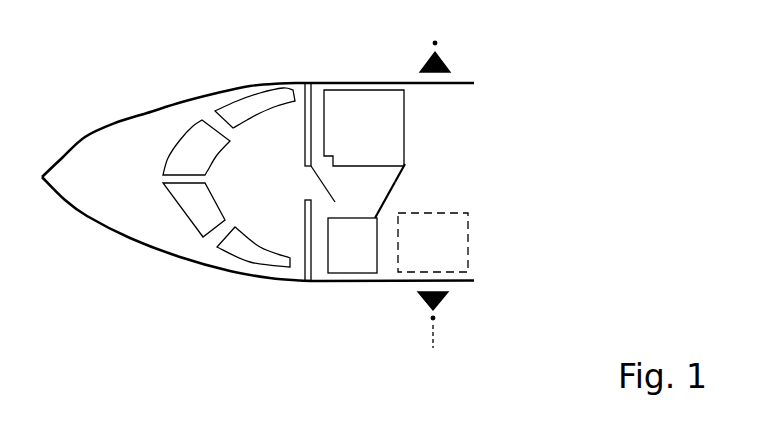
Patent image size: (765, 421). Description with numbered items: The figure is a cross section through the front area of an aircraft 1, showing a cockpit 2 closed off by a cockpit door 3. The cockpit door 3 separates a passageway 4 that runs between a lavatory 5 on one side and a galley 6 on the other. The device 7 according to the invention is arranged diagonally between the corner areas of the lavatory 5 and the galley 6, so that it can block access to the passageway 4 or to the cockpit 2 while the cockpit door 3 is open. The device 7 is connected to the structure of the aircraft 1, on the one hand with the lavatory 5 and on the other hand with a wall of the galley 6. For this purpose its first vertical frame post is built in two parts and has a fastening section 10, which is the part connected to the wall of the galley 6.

The aircraft 1 is at (150, 102).
The cockpit 2 is at (235, 180).
The cockpit door 3 is at (313, 175).
The passageway 4 is at (357, 183).
The lavatory 5 is at (350, 262).
The galley 6 is at (375, 120).
The device 7 is at (393, 195).
The fastening section 10 is at (402, 164).